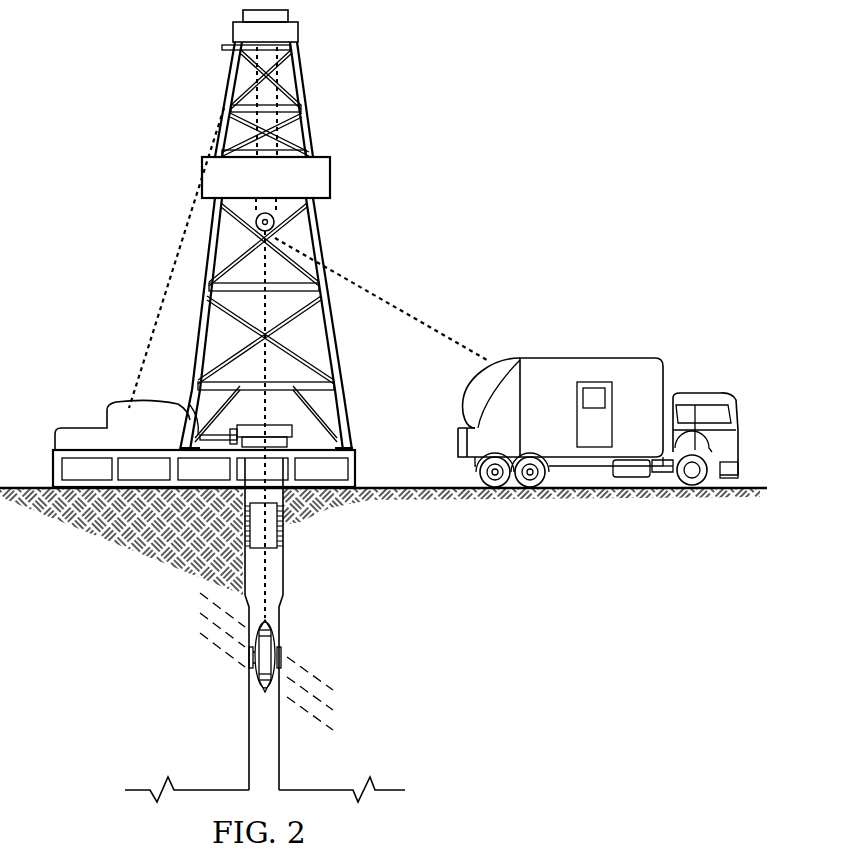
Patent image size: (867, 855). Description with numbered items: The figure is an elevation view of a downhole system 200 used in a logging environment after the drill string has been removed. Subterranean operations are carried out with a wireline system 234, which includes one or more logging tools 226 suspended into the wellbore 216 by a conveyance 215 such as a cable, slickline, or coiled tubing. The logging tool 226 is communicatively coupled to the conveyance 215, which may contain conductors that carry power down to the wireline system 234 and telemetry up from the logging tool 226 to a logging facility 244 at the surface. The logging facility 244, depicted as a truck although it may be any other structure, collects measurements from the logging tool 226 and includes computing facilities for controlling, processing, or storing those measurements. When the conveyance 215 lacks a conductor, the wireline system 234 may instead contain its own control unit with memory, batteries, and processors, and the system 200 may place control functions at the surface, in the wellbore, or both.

The downhole system 200 is at (492, 186).
The conveyance 215 is at (283, 532).
The wellbore 216 is at (283, 580).
The logging tool 226 is at (248, 658).
The wireline system 234 is at (266, 644).
The logging facility 244 is at (600, 355).